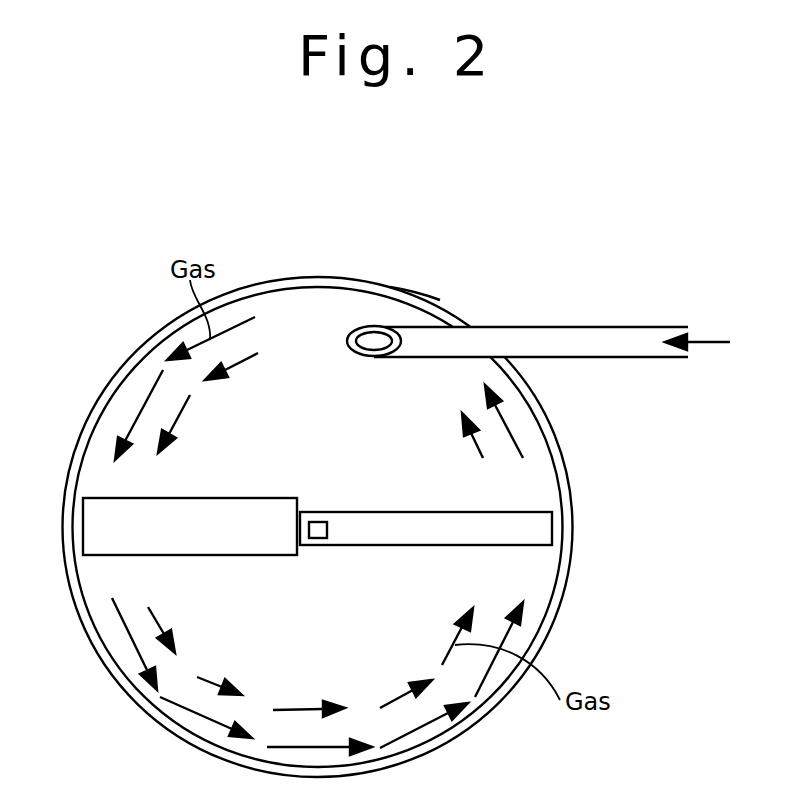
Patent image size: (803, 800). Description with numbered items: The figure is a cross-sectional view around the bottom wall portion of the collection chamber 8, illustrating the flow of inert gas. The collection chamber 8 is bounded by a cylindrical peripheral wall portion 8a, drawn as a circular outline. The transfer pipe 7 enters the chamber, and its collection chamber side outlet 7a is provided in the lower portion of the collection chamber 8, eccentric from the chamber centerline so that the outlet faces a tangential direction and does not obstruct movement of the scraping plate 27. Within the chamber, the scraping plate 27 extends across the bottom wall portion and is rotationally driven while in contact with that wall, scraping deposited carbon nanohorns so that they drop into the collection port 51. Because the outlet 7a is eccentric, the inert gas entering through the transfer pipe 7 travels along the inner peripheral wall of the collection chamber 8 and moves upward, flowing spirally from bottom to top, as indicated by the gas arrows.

The transfer pipe 7 is at (585, 326).
The collection chamber side outlet of the transfer pipe 7a is at (375, 326).
The collection chamber 8 is at (560, 447).
The cylindrical peripheral wall portion 8a is at (410, 293).
The scraping plate 27 is at (543, 523).
The collection port 51 is at (138, 533).